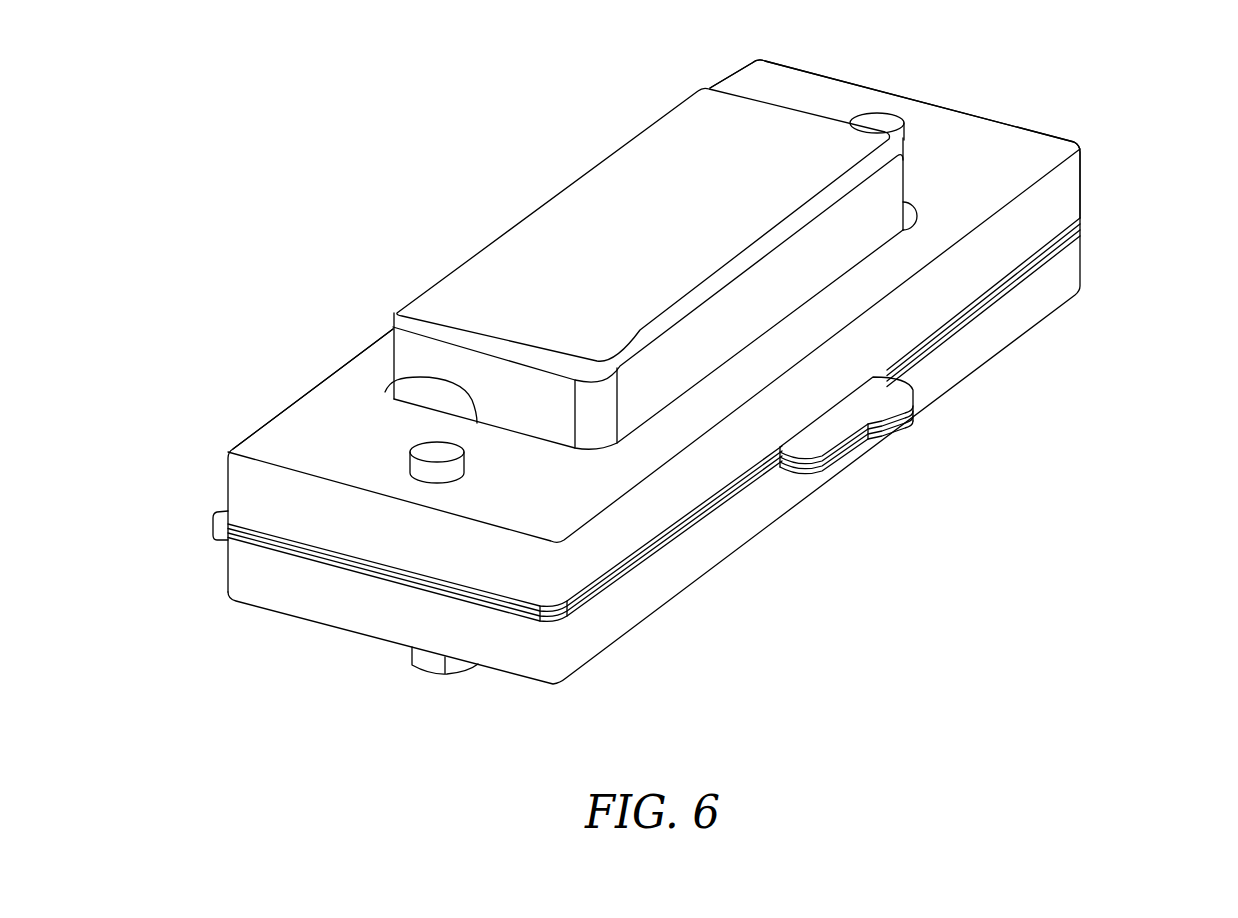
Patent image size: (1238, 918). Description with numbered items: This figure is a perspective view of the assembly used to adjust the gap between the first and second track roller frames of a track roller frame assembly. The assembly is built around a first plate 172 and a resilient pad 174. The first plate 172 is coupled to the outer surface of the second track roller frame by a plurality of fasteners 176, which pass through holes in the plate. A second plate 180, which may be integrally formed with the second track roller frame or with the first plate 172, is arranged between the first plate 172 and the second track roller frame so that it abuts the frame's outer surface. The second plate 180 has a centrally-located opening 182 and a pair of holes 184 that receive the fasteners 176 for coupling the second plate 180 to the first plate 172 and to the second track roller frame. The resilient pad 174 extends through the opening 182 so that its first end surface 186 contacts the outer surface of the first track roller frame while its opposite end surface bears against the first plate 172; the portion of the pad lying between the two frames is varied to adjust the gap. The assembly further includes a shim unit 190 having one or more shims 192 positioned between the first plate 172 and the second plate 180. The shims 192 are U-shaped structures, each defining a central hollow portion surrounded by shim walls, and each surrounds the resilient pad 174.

The first plate 172 is at (1053, 281).
The resilient pad 174 is at (890, 185).
The fasteners 176 is at (434, 663).
The second plate 180 is at (1058, 195).
The opening 182 is at (387, 391).
The holes 184 is at (466, 453).
The first end surface 186 is at (621, 235).
The shim unit 190 is at (210, 519).
The shims 192 is at (304, 556).